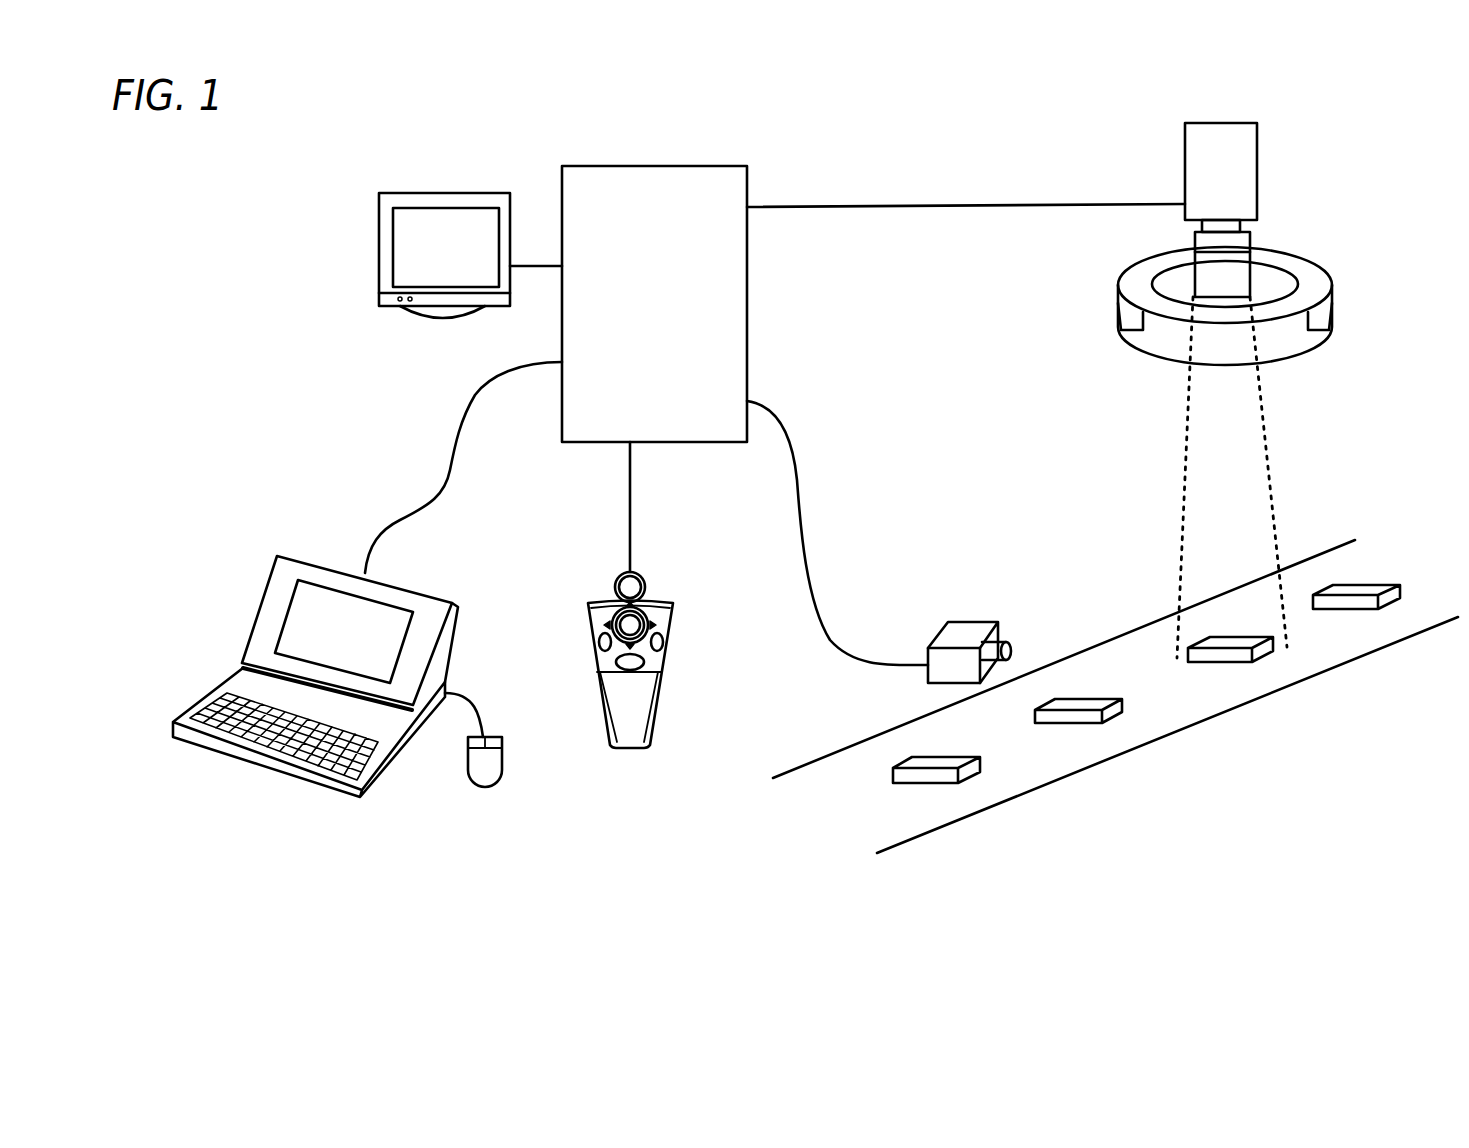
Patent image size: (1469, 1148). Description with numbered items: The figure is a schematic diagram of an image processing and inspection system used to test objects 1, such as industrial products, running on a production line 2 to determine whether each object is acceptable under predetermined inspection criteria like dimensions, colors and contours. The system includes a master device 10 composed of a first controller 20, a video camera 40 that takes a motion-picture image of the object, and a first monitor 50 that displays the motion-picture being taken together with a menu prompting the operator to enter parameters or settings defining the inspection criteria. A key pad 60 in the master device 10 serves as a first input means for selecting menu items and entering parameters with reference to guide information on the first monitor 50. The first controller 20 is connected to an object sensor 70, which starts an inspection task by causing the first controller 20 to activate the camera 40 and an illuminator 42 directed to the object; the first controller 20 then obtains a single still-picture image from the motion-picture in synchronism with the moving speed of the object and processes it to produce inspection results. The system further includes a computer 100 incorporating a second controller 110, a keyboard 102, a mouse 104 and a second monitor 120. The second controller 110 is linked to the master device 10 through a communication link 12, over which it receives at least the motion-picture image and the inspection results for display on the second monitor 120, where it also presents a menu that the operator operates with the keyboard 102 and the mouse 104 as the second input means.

The object 1 is at (1238, 653).
The production line 2 is at (1063, 761).
The master device 10 is at (613, 163).
The communication link 12 is at (455, 440).
The first controller 20 is at (654, 304).
The video camera 40 is at (1221, 210).
The illuminator 42 is at (1148, 343).
The first monitor 50 is at (413, 190).
The key pad 60 is at (675, 638).
The object sensor 70 is at (948, 620).
The computer 100 is at (295, 545).
The keyboard 102 is at (267, 740).
The mouse 104 is at (503, 763).
The second controller 110 is at (245, 682).
The second monitor 120 is at (393, 613).